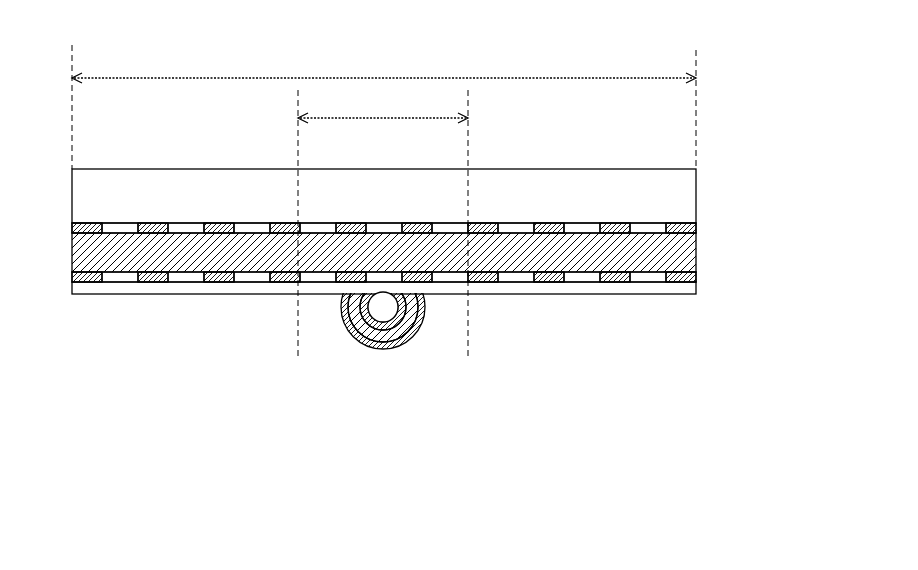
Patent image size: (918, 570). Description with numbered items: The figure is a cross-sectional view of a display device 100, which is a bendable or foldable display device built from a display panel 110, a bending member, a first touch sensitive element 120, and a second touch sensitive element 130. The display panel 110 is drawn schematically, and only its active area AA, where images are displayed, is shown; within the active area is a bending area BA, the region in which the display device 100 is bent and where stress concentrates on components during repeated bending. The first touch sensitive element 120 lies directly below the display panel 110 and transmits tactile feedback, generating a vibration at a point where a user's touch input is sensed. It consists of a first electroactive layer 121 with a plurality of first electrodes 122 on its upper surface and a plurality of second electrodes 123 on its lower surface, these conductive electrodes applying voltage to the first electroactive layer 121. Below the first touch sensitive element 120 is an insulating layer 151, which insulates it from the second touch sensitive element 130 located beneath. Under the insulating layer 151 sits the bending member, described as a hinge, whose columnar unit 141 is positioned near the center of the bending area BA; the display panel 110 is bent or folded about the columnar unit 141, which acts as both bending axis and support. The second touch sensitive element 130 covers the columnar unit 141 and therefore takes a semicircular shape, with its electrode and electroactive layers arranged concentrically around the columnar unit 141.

The display device 100 is at (690, 24).
The display panel 110 is at (676, 196).
The first touch sensitive element 120 is at (437, 249).
The first electroactive layer 121 is at (680, 250).
The first electrodes 122 is at (680, 228).
The second electrodes 123 is at (680, 277).
The second touch sensitive element 130 is at (463, 315).
The columnar unit 141 is at (383, 313).
The insulating layer 151 is at (676, 288).